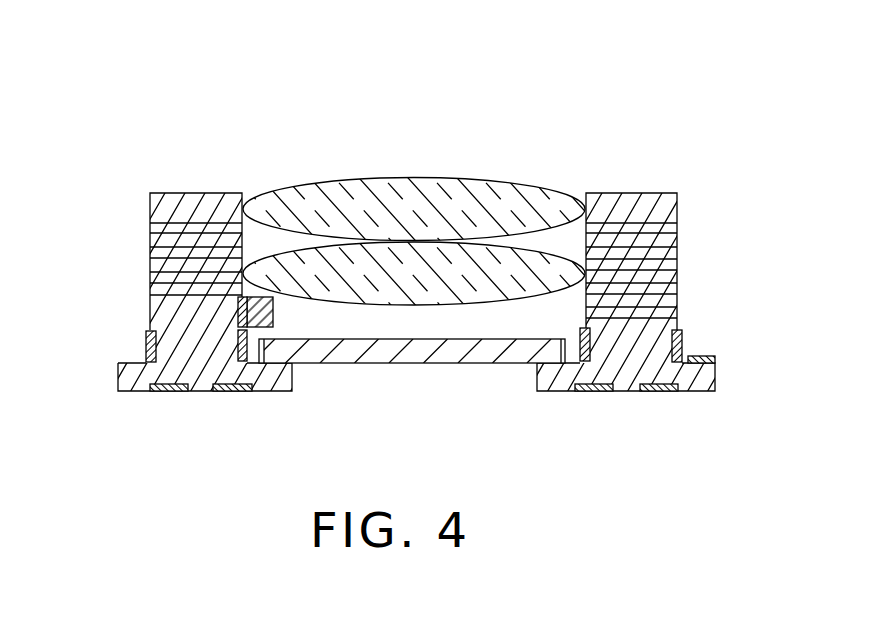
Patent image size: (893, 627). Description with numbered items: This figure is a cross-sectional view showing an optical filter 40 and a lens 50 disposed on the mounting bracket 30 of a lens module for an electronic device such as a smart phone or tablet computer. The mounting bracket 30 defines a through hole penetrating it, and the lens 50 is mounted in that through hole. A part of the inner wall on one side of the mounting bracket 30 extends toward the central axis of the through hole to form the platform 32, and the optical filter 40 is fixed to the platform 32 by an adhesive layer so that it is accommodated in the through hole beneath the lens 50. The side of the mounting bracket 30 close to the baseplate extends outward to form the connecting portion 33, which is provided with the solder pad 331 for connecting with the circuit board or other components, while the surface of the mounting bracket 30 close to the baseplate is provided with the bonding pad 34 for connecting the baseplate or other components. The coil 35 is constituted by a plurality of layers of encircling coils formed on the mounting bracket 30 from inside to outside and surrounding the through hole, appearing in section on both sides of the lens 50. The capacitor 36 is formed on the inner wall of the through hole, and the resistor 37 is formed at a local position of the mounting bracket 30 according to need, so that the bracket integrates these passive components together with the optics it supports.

The mounting bracket 30 is at (440, 72).
The platform 32 is at (262, 377).
The connecting portion 33 is at (693, 378).
The solder pad 331 is at (703, 356).
The bonding pad 34 is at (655, 385).
The coil 35 is at (663, 270).
The capacitor 36 is at (268, 313).
The resistor 37 is at (147, 357).
The optical filter 40 is at (430, 353).
The lens 50 is at (505, 195).